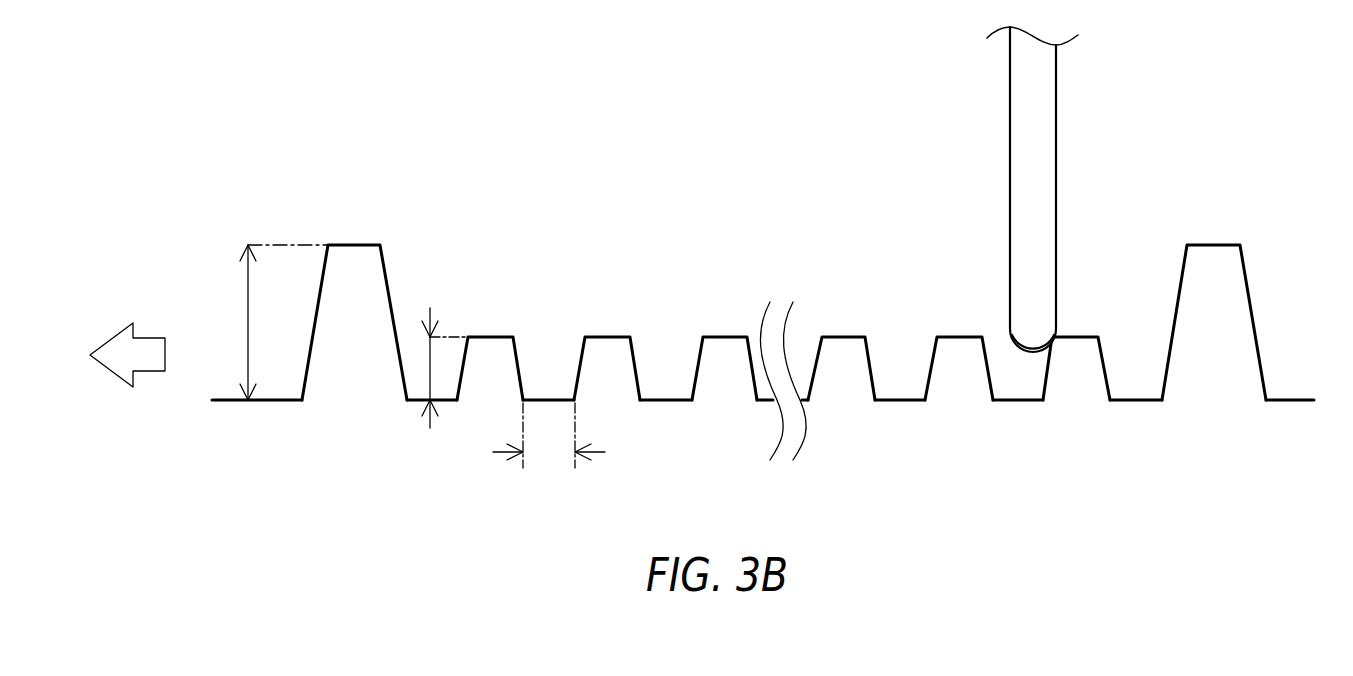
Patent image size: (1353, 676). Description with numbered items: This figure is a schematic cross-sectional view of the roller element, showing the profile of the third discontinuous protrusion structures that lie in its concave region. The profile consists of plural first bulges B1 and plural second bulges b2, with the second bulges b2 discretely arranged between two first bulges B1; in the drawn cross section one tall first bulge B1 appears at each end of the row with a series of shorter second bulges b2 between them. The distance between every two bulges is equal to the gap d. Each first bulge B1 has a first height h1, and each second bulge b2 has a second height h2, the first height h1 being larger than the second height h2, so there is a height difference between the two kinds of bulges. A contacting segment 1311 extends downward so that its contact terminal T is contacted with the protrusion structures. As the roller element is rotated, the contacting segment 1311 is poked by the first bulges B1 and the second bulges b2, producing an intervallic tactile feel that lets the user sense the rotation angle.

The first bulge B1 is at (355, 243).
The second bulge b2 is at (490, 335).
The contacting segment 1311 is at (1048, 108).
The contact terminal T is at (1033, 352).
The first height h1 is at (279, 322).
The second height h2 is at (441, 368).
The gap d is at (549, 435).